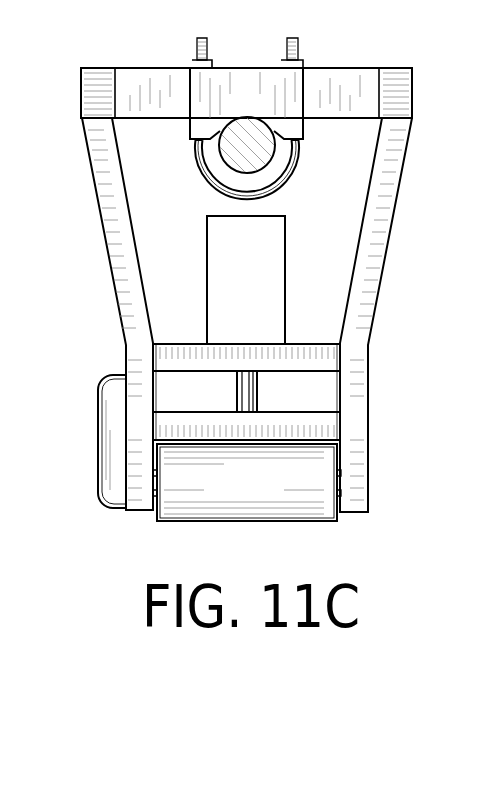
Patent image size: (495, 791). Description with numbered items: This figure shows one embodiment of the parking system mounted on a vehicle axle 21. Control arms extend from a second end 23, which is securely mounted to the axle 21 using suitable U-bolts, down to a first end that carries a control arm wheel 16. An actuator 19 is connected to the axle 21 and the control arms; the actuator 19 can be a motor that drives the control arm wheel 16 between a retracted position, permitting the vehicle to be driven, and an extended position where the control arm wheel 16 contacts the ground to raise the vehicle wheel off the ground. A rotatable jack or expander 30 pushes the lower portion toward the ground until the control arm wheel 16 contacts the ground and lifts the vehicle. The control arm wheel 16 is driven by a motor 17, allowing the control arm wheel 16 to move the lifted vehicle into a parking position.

The second end 23 is at (235, 78).
The vehicle axle 21 is at (262, 152).
The actuator 19 is at (263, 297).
The expander 30 is at (236, 395).
The motor 17 is at (113, 428).
The control arm wheel 16 is at (257, 498).